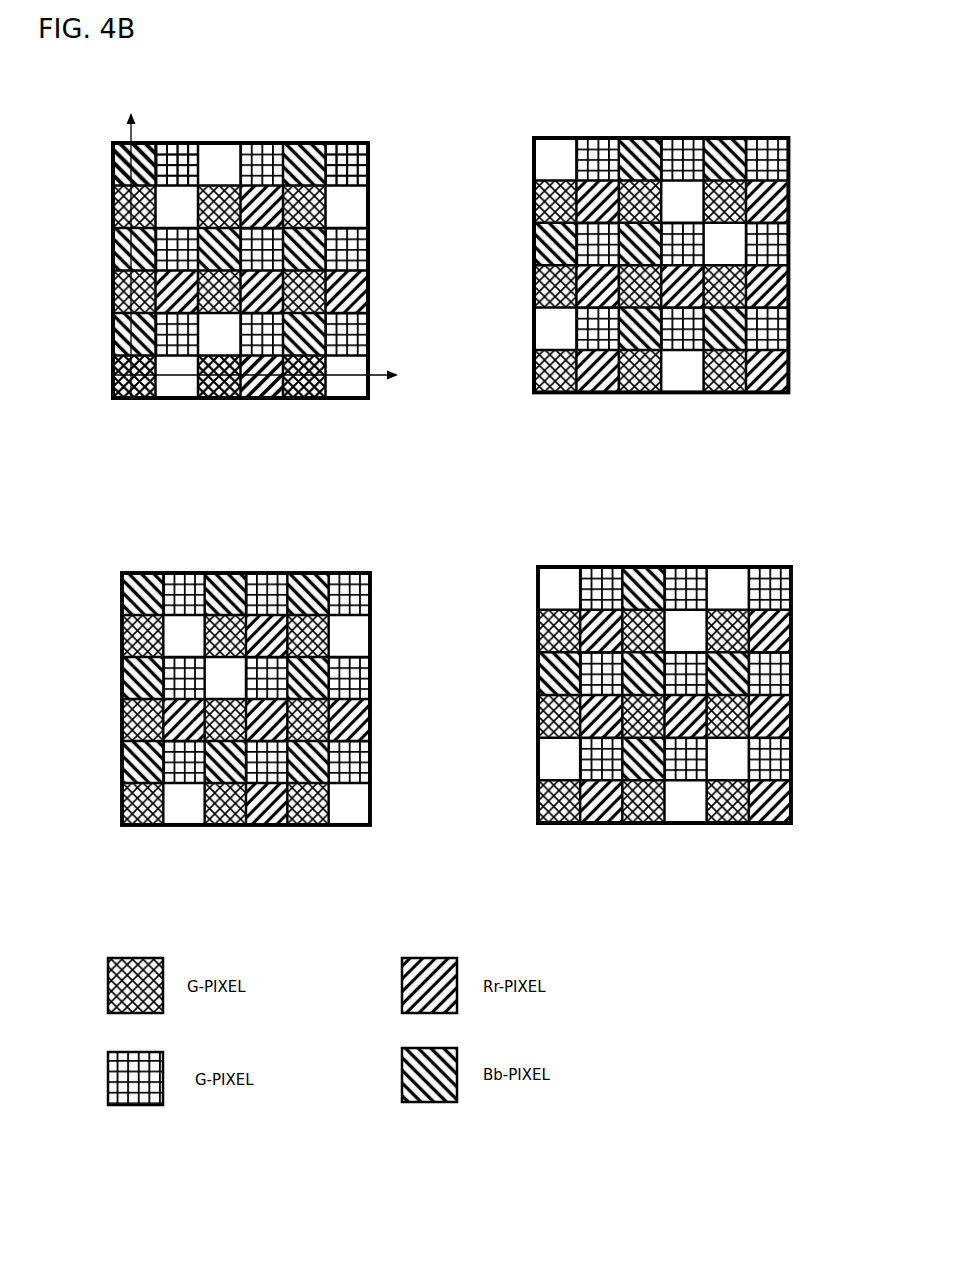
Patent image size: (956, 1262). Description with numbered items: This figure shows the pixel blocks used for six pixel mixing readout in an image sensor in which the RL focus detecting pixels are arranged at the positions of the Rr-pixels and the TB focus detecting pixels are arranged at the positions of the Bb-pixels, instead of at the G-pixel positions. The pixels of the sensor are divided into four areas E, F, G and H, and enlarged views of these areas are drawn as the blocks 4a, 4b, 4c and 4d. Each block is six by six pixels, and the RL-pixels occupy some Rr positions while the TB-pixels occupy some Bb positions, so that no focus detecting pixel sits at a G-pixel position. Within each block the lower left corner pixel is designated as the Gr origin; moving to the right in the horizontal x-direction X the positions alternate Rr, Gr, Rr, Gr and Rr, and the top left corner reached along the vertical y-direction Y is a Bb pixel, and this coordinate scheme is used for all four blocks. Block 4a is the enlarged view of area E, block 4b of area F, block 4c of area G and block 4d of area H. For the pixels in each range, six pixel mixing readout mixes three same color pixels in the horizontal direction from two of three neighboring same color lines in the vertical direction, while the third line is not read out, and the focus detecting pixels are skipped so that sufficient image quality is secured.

The enlarged view of area E 4a is at (328, 119).
The enlarged view of area F 4b is at (655, 119).
The enlarged view of area G 4c is at (194, 554).
The enlarged view of area H 4d is at (627, 543).
The area E is at (368, 233).
The area F is at (534, 275).
The area G is at (370, 665).
The area H is at (538, 705).
The x-direction X is at (266, 378).
The y-direction Y is at (130, 241).